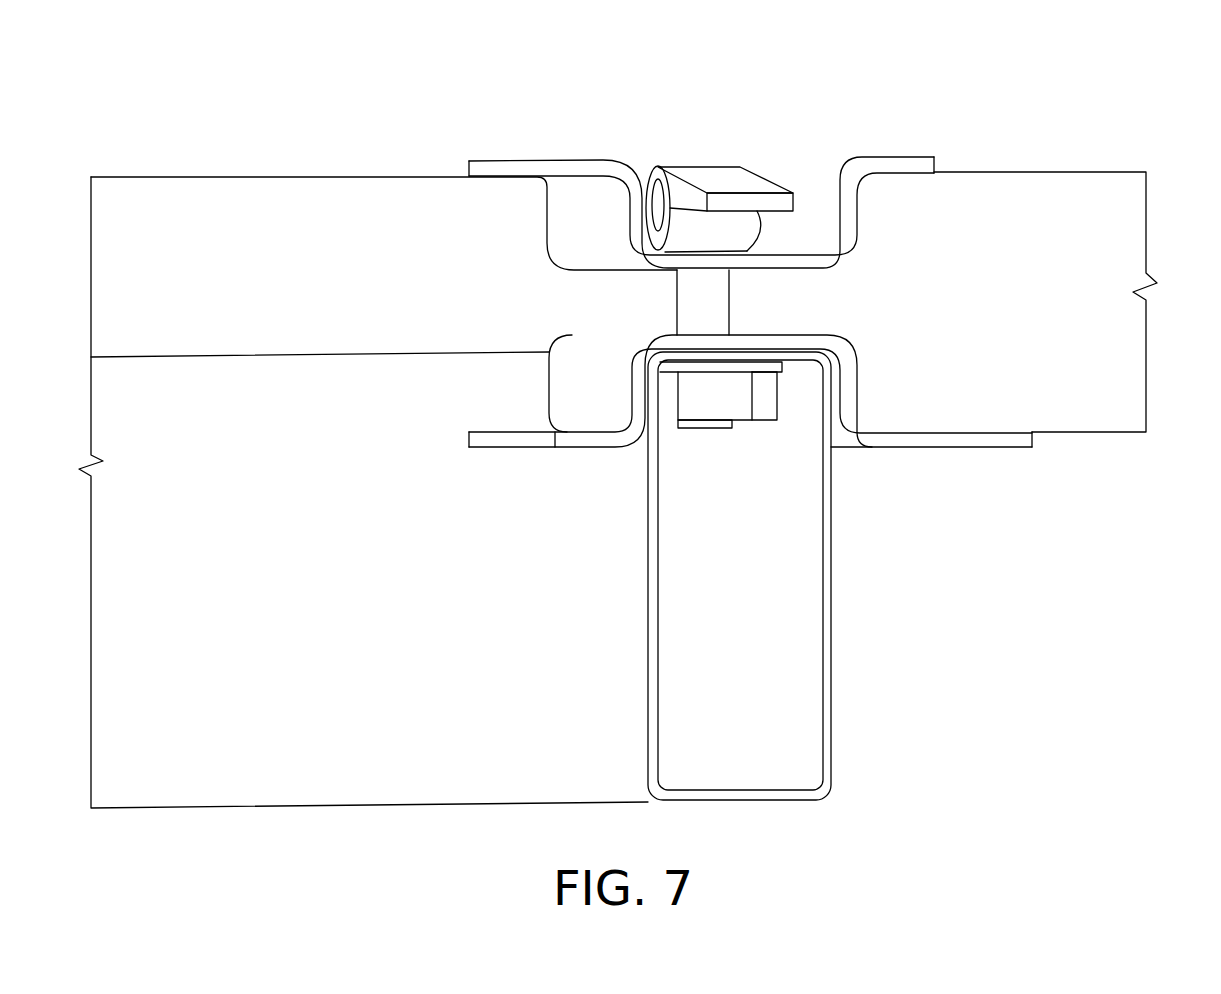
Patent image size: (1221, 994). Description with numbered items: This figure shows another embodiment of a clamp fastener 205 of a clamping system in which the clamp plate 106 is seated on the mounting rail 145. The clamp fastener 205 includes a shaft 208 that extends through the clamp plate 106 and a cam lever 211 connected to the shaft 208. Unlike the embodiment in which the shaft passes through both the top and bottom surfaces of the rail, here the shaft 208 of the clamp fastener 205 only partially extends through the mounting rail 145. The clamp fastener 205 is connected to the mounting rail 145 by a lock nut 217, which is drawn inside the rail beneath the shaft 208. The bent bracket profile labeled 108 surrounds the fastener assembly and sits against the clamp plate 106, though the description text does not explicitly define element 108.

The clamp plate 106 is at (552, 177).
The bracket 108 is at (1008, 116).
The clamp fastener 205 is at (698, 167).
The cam lever 211 is at (740, 185).
The shaft 208 is at (717, 307).
The lock nut 217 is at (718, 397).
The mounting rail 145 is at (833, 672).